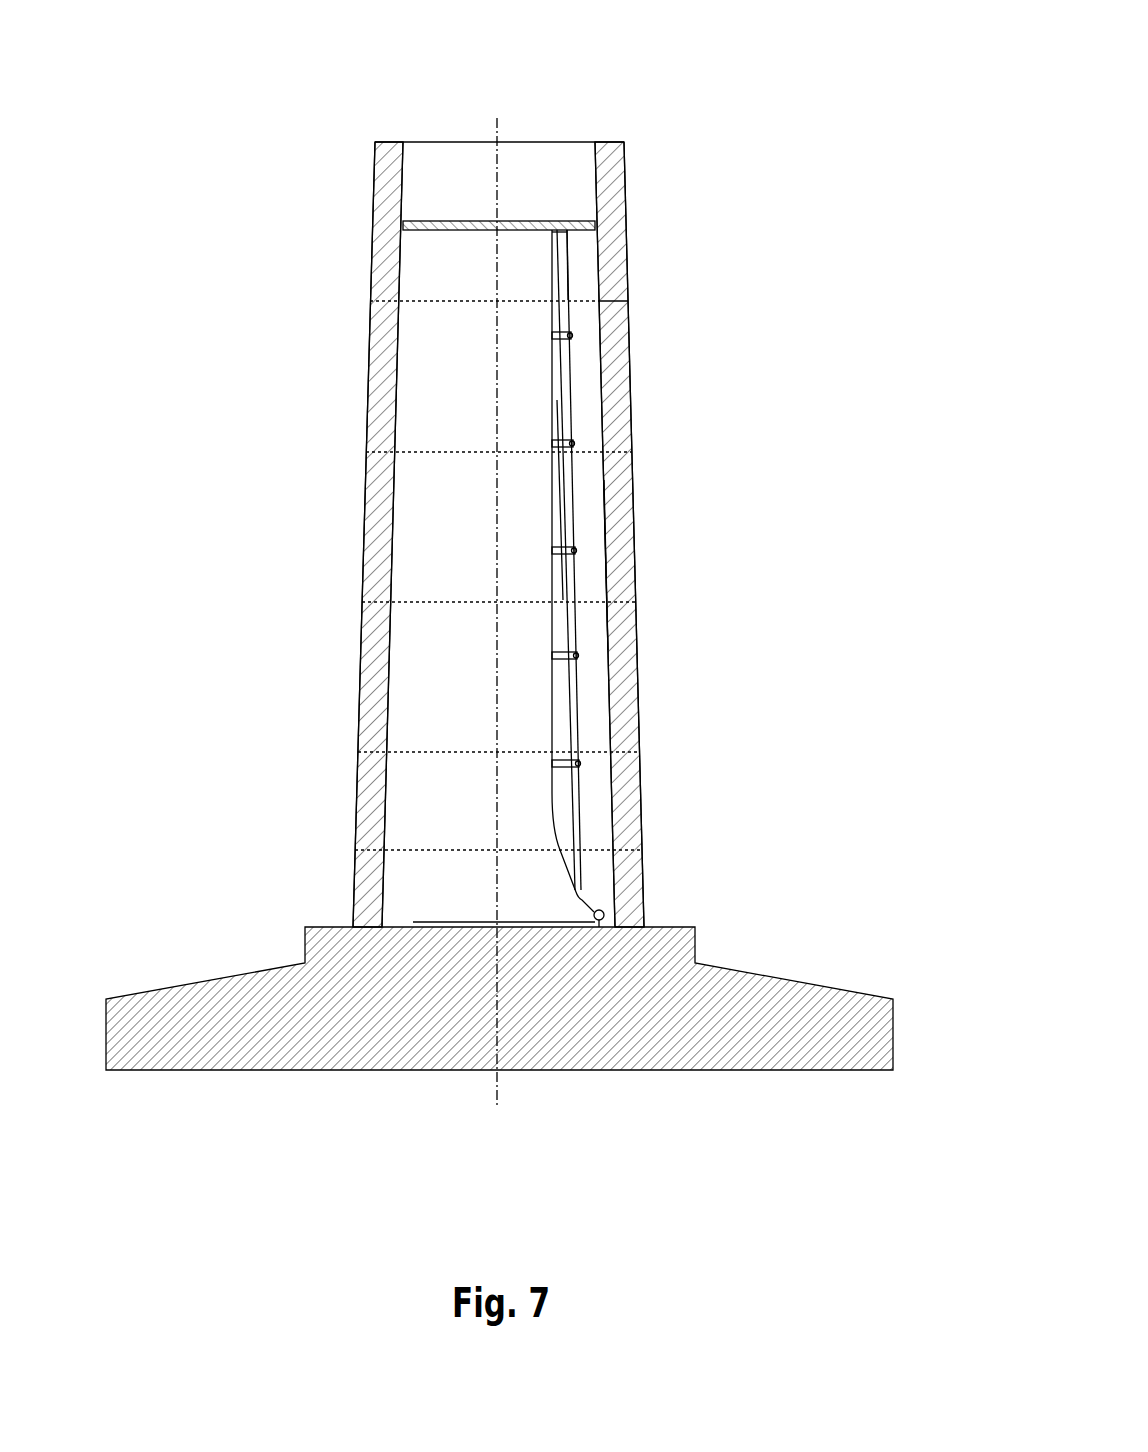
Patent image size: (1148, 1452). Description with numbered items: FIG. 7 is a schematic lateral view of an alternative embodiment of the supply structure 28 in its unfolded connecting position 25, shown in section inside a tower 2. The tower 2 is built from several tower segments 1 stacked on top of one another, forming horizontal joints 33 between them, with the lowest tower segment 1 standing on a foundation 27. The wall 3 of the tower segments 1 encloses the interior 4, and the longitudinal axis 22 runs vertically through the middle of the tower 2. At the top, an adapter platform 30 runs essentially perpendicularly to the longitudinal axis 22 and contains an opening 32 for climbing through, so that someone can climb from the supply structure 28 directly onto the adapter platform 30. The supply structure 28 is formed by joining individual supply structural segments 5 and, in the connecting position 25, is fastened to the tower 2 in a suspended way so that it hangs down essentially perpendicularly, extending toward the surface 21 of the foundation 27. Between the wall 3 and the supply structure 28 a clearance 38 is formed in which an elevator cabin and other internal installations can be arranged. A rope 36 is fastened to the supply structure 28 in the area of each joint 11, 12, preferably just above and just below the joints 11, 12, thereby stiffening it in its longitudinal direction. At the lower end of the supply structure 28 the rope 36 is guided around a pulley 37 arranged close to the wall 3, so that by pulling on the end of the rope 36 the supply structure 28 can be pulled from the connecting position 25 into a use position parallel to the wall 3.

The tower segment 1 is at (644, 376).
The tower 2 is at (678, 102).
The wall 3 is at (617, 440).
The interior 4 is at (410, 650).
The supply structural segment 5 is at (563, 398).
The joint 11 is at (379, 521).
The joint 12 is at (560, 335).
The surface of the foundation 21 is at (599, 927).
The longitudinal axis 22 is at (497, 118).
The connecting position 25 is at (330, 718).
The foundation 27 is at (318, 1043).
The supply structure 28 is at (545, 523).
The adapter platform 30 is at (428, 222).
The opening 32 is at (567, 222).
The horizontal joint 33 is at (610, 300).
The rope 36 is at (555, 851).
The pulley 37 is at (605, 911).
The clearance 38 is at (593, 575).